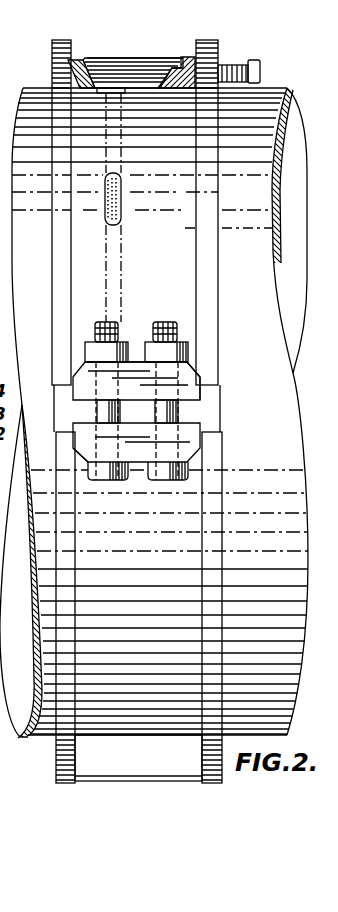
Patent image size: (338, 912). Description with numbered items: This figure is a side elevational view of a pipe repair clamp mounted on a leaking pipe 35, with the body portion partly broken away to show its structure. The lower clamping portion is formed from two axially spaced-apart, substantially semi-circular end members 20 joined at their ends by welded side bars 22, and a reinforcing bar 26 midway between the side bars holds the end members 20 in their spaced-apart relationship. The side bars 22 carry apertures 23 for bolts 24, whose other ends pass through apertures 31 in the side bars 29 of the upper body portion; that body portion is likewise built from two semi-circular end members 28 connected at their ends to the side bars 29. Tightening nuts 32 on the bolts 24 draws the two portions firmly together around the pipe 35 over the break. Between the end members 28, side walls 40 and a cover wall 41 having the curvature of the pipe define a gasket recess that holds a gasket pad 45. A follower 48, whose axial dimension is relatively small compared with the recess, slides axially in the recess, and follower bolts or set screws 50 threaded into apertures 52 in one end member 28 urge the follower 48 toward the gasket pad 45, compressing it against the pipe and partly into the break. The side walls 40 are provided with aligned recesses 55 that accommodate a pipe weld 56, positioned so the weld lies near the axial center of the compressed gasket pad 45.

The end members 20 is at (70, 488).
The side bars 22 is at (137, 450).
The apertures 23 is at (96, 440).
The bolts 24 is at (106, 322).
The reinforcing bar 26 is at (117, 780).
The end members 28 is at (58, 226).
The side bars 29 is at (135, 362).
The apertures 31 is at (182, 376).
The nuts 32 is at (124, 343).
The pipe 35 is at (305, 142).
The side walls 40 is at (140, 82).
The cover wall 41 is at (96, 59).
The gasket pad 45 is at (66, 78).
The follower 48 is at (184, 58).
The follower bolts or set screws 50 is at (262, 64).
The apertures 52 is at (219, 64).
The recesses 55 is at (110, 93).
The weld 56 is at (120, 215).